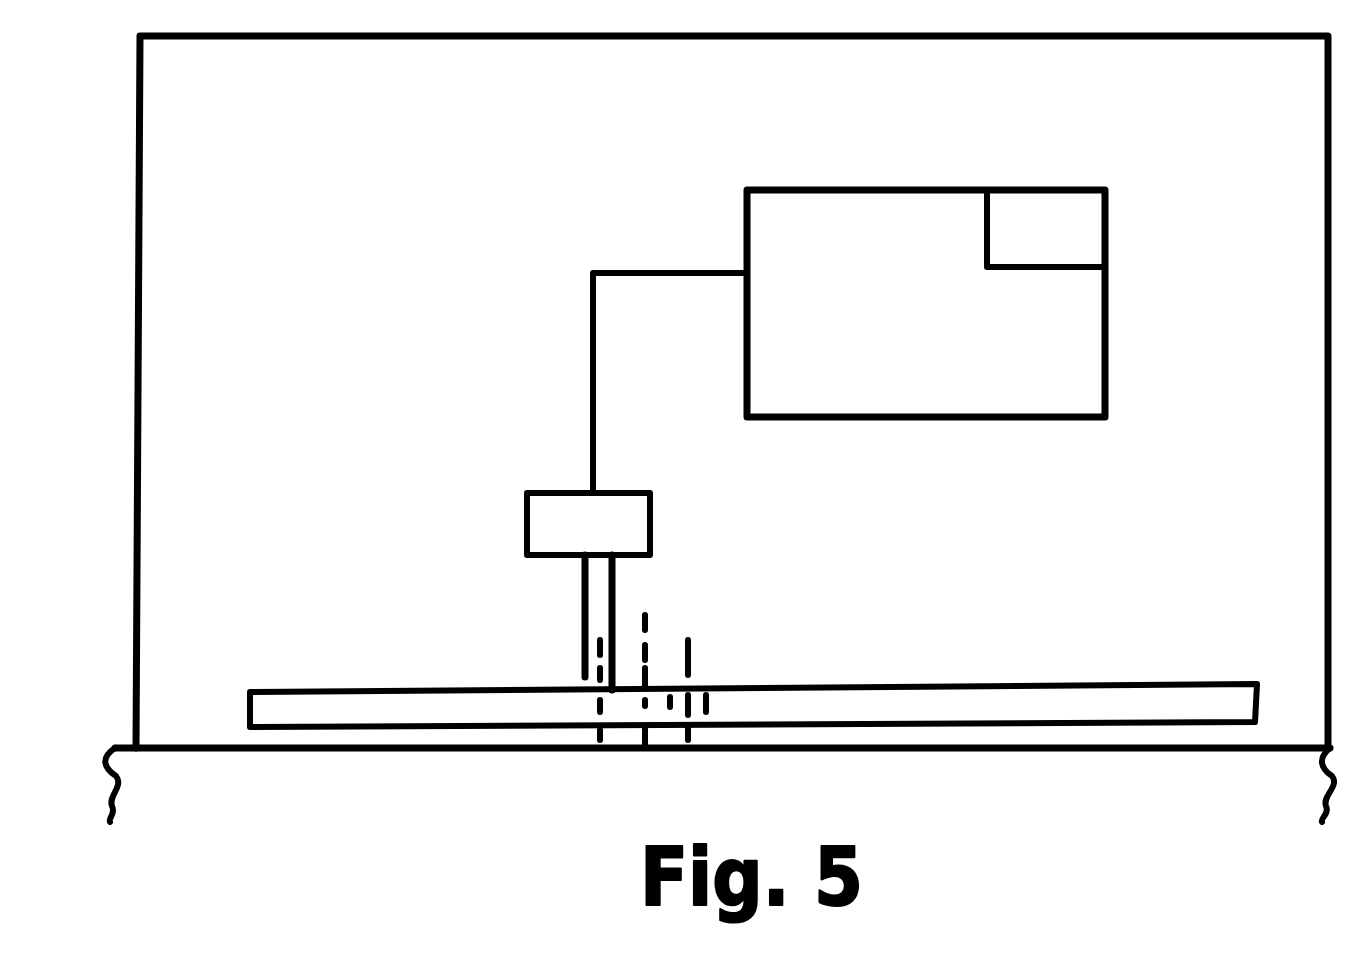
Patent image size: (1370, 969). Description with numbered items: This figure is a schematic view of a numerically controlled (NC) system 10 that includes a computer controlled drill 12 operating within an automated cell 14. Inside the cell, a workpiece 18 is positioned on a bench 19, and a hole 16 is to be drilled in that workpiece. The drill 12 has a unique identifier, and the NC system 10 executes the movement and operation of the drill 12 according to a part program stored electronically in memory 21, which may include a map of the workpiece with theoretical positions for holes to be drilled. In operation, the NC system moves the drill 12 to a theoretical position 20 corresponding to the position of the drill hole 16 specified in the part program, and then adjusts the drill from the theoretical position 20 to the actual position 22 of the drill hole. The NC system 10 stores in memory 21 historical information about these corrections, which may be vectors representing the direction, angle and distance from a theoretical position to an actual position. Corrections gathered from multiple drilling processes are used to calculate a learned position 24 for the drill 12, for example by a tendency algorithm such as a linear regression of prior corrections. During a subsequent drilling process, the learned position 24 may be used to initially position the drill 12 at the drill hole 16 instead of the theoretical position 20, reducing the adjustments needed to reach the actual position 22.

The automated cell 14 is at (450, 62).
The bench 19 is at (815, 771).
The hole 16 is at (933, 398).
The memory 21 is at (1070, 248).
The computer controlled drill 12 is at (613, 580).
The workpiece 18 is at (1037, 703).
The theoretical position 20 is at (563, 673).
The learned position 24 is at (660, 637).
The actual position 22 is at (700, 647).
The numerically controlled system 10 is at (707, 687).